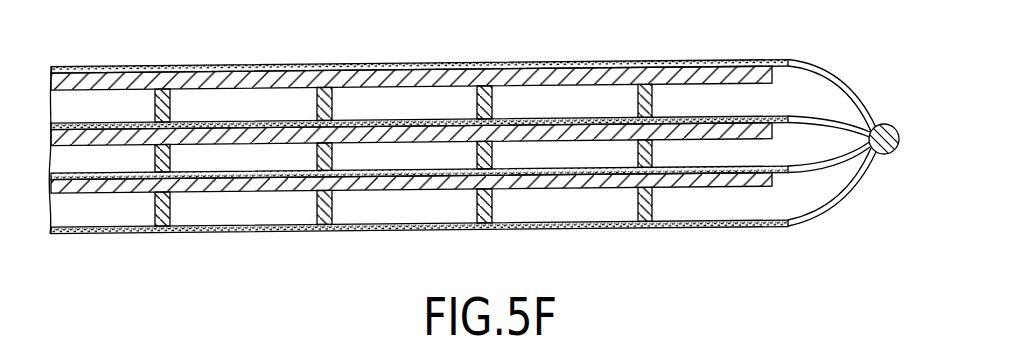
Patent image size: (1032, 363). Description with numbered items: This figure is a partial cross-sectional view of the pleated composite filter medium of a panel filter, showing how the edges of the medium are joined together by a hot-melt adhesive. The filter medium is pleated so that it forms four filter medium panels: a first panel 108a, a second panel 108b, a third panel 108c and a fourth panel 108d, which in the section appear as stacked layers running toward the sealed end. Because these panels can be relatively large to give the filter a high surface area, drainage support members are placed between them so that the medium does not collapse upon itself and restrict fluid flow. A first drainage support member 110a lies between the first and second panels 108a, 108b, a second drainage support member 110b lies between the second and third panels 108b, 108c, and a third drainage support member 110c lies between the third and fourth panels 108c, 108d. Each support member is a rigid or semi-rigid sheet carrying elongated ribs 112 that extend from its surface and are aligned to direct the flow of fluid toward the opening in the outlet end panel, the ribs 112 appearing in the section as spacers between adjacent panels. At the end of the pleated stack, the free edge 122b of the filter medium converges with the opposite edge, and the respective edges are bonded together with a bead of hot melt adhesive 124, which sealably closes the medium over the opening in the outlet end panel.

The first panel 108a is at (618, 62).
The second panel 108b is at (533, 118).
The third panel 108c is at (533, 168).
The fourth panel 108d is at (582, 229).
The first drainage support member 110a is at (220, 82).
The second drainage support member 110b is at (219, 124).
The third drainage support member 110c is at (212, 186).
The elongated ribs 112 is at (493, 88).
The edge of the filter medium 122b is at (888, 125).
The bead of hot melt adhesive 124 is at (891, 156).